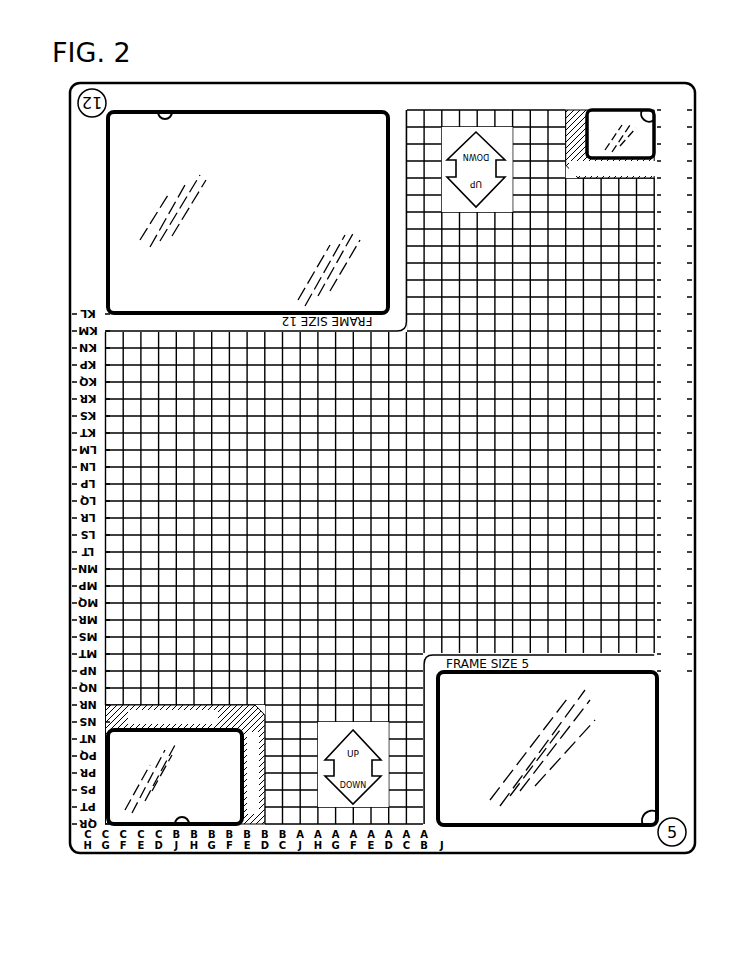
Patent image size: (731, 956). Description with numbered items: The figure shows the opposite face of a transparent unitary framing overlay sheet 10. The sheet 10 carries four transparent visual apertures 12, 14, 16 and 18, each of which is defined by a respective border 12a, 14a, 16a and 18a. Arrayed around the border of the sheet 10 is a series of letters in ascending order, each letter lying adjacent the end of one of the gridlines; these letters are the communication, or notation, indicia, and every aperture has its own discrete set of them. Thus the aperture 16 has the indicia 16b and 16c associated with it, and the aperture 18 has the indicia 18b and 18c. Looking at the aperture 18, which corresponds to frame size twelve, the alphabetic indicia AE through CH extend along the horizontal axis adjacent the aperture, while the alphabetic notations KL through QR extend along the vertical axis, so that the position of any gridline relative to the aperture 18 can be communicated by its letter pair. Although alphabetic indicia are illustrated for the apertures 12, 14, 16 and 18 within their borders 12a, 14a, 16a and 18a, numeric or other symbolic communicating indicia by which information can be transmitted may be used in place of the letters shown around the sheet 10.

The transparent unitary framing overlay sheet 10 is at (489, 66).
The transparent visual aperture 12 is at (599, 120).
The border 12a is at (647, 110).
The transparent visual aperture 14 is at (130, 812).
The border 14a is at (182, 825).
The transparent visual aperture 16 is at (580, 812).
The border 16a is at (646, 812).
The indicia 16b is at (684, 603).
The indicia 16c is at (524, 853).
The transparent visual aperture 18 is at (252, 130).
The border 18a is at (165, 111).
The indicia 18b is at (431, 83).
The indicia 18c is at (70, 244).